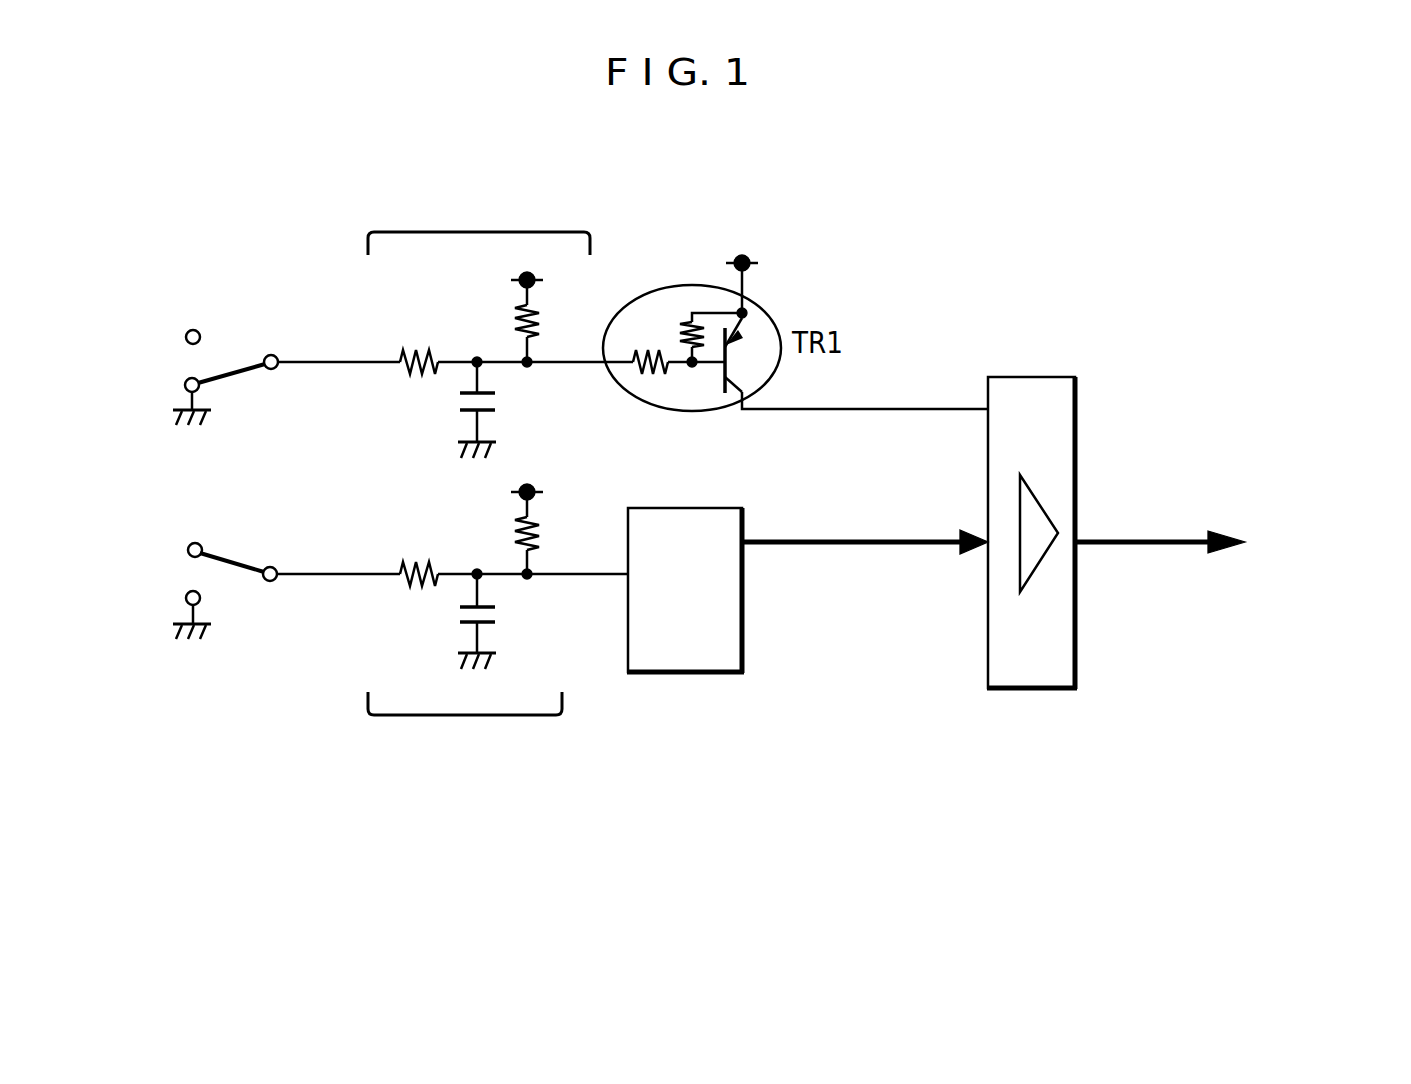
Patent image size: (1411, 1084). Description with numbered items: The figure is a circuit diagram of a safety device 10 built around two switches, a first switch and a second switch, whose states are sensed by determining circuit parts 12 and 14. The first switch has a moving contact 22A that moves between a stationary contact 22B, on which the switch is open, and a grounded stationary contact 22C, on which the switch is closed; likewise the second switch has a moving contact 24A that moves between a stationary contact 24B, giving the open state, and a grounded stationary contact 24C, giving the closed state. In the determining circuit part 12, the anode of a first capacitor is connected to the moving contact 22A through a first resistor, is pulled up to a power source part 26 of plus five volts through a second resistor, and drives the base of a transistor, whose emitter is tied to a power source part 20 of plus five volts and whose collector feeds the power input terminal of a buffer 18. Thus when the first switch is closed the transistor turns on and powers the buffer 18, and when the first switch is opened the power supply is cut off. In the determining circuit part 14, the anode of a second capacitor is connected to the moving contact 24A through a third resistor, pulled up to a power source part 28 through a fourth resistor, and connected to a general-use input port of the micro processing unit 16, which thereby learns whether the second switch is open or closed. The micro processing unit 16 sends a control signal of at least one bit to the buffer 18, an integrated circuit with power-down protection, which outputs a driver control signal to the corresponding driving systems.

The safety device 10 is at (885, 235).
The determining circuit part 12 is at (412, 230).
The determining circuit part 14 is at (470, 718).
The micro processing unit 16 is at (690, 672).
The buffer 18 is at (1055, 377).
The power source part 20 is at (744, 256).
The moving contact 22A is at (236, 371).
The stationary contact 22B is at (188, 331).
The stationary contact 22C is at (185, 385).
The moving contact 24A is at (250, 568).
The stationary contact 24B is at (189, 546).
The stationary contact 24C is at (185, 598).
The power source part 26 is at (517, 277).
The power source part 28 is at (518, 489).